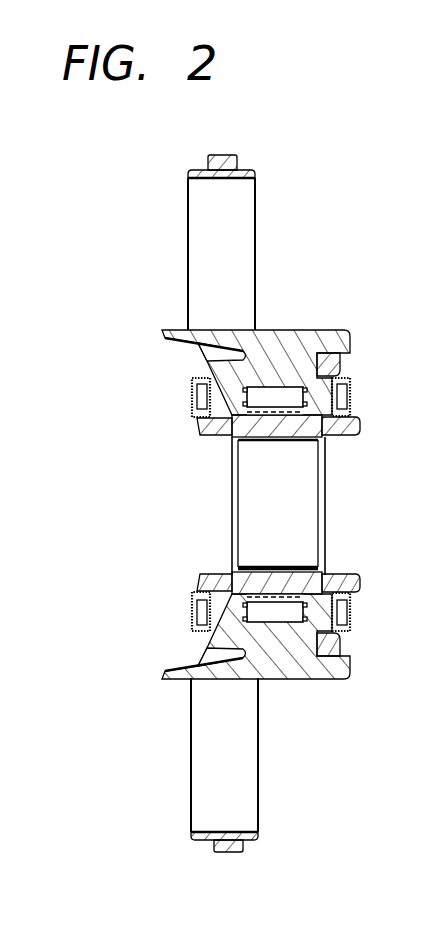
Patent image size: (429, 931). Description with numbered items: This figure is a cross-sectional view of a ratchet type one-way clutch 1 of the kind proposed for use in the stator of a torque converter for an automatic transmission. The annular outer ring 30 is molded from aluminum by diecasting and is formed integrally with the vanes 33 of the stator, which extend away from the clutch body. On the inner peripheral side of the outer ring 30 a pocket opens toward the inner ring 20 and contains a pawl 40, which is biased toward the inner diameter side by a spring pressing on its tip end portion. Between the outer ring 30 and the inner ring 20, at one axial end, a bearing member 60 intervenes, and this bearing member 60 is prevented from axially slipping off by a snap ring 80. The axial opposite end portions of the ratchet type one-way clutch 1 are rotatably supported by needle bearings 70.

The ratchet type one-way clutch 1 is at (272, 213).
The inner ring 20 is at (300, 577).
The outer ring 30 is at (285, 365).
The vanes 33 is at (205, 242).
The pawl 40 is at (265, 386).
The bearing member 60 is at (357, 428).
The needle bearings 70 is at (353, 391).
The snap ring 80 is at (347, 360).